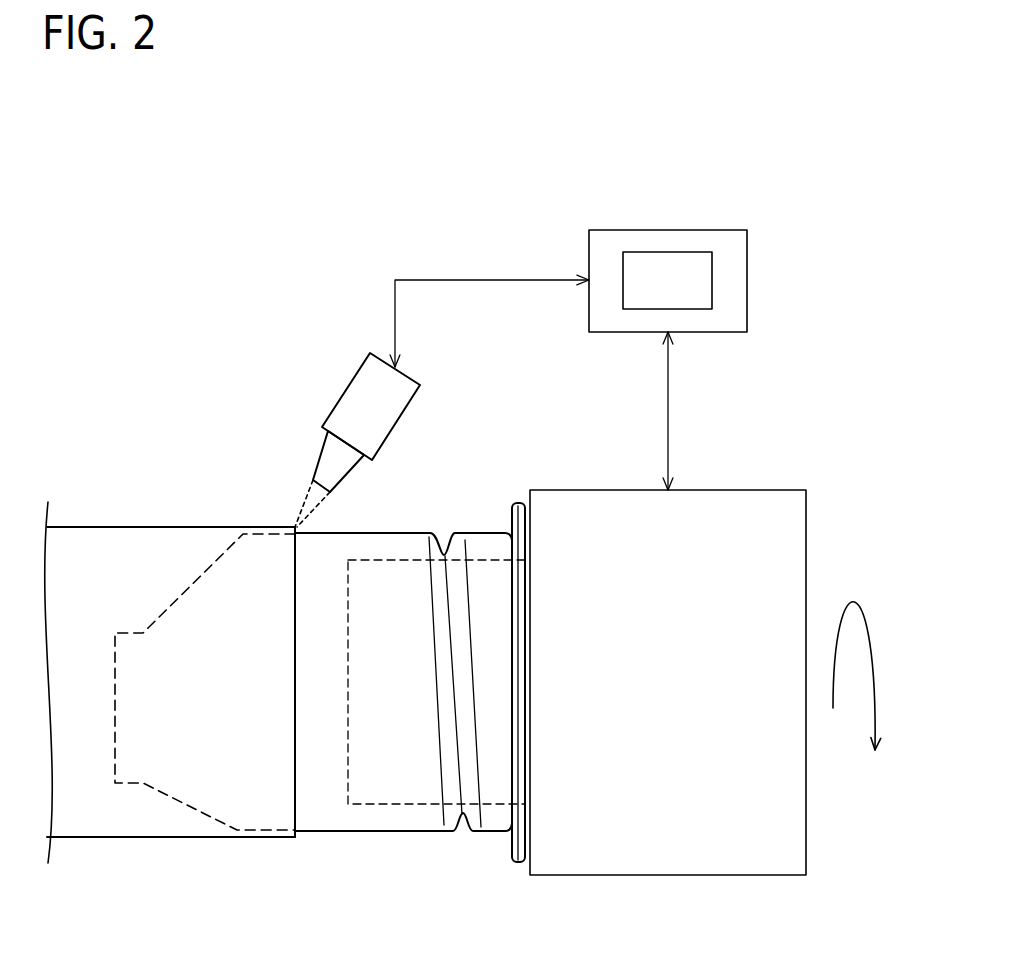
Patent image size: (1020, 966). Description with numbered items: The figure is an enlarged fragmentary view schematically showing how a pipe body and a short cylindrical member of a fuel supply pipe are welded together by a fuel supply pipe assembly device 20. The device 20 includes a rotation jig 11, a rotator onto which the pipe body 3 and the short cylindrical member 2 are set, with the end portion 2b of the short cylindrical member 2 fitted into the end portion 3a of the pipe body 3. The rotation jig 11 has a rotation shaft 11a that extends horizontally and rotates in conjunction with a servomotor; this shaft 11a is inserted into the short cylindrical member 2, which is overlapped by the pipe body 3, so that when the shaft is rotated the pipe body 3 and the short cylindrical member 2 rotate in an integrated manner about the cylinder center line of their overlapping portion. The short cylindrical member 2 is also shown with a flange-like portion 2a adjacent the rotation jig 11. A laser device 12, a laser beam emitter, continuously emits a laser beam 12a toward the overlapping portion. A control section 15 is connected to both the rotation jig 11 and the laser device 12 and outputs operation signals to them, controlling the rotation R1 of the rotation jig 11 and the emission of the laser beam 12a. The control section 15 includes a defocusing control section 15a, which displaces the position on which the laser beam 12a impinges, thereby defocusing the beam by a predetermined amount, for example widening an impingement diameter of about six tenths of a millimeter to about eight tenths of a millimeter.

The fuel supply pipe assembly device 20 is at (198, 210).
The pipe body 3 is at (122, 840).
The end portion of the pipe body 3a is at (297, 840).
The end portion of the short cylindrical member 2b is at (265, 834).
The short cylindrical member 2 is at (375, 833).
The flange 2a is at (514, 503).
The rotation jig 11 is at (762, 490).
The rotation shaft 11a is at (415, 806).
The control section 15 is at (670, 230).
The defocusing control section 15a is at (712, 280).
The laser device 12 is at (377, 353).
The laser beam 12a is at (307, 502).
The rotation R1 is at (849, 680).